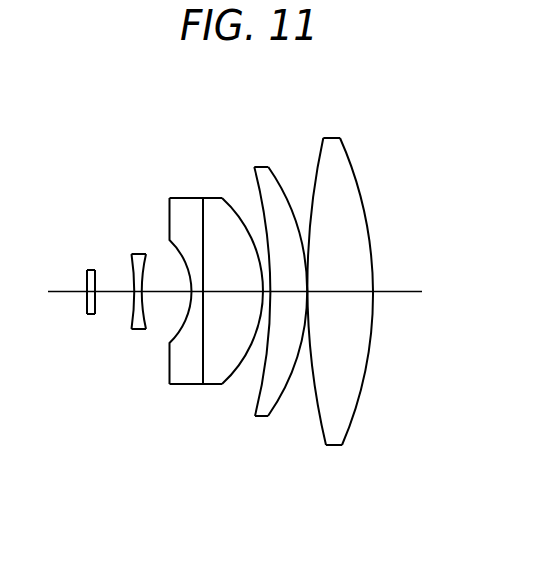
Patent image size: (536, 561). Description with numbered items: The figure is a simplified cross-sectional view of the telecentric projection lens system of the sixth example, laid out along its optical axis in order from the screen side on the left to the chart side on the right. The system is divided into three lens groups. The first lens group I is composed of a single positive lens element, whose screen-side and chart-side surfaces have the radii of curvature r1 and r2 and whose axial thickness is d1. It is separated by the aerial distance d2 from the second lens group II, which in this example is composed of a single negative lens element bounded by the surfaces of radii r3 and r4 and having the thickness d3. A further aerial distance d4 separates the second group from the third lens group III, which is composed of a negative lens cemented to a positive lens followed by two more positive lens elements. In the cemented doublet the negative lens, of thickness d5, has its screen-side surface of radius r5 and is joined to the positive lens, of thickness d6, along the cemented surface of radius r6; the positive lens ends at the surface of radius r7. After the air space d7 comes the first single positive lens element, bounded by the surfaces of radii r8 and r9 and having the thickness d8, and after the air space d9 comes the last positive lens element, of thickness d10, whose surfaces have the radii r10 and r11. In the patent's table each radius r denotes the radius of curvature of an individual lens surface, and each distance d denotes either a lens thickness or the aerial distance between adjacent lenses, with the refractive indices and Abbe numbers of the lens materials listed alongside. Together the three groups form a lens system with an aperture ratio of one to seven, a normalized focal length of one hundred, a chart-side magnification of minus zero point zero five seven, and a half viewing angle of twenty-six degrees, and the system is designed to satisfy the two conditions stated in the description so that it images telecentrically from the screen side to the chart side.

The radius of curvature of surface 1 r1 is at (87, 270).
The radius of curvature of surface 2 r2 is at (95, 270).
The radius of curvature of surface 3 r3 is at (132, 254).
The radius of curvature of surface 4 r4 is at (148, 257).
The radius of curvature of surface 5 r5 is at (170, 252).
The radius of curvature of surface 6 r6 is at (203, 220).
The radius of curvature of surface 7 r7 is at (235, 207).
The radius of curvature of surface 8 r8 is at (255, 195).
The radius of curvature of surface 9 r9 is at (278, 183).
The radius of curvature of surface 10 r10 is at (319, 160).
The radius of curvature of surface 11 r11 is at (348, 157).
The lens thickness d1 is at (91, 315).
The aerial distance between lenses d2 is at (112, 292).
The lens thickness d3 is at (130, 329).
The aerial distance between lenses d4 is at (157, 292).
The lens thickness d5 is at (192, 384).
The lens thickness d6 is at (228, 292).
The aerial distance between lenses d7 is at (283, 292).
The lens thickness d8 is at (307, 292).
The aerial distance between lenses d9 is at (311, 292).
The lens thickness d10 is at (365, 314).
The first lens group I is at (90, 301).
The second lens group II is at (145, 301).
The third lens group III is at (289, 301).